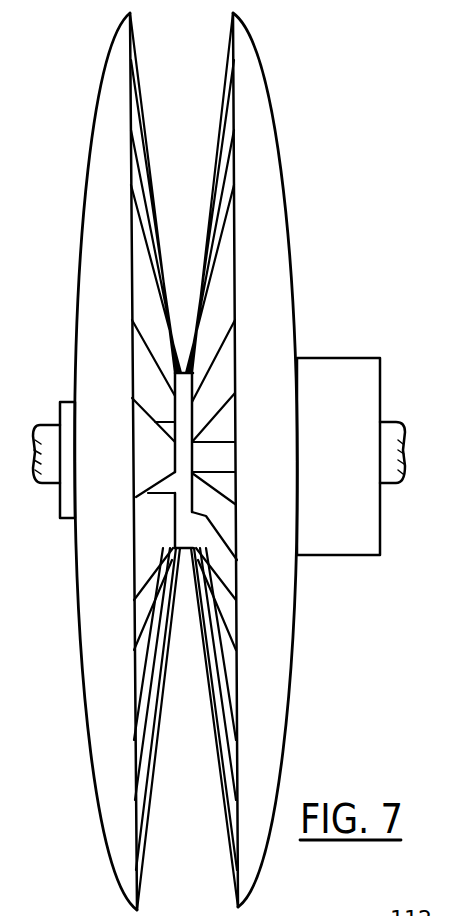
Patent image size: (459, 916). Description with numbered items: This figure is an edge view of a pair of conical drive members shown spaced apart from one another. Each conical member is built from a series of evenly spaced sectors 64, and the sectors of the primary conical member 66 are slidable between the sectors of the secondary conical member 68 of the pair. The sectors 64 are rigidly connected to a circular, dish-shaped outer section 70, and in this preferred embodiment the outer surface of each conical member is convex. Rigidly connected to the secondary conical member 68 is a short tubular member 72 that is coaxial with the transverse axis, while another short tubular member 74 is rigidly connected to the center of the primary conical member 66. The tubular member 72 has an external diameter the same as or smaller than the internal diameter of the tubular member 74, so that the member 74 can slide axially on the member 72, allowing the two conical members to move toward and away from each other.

The sectors 64 is at (134, 437).
The primary conical member 66 is at (285, 622).
The secondary conical member 68 is at (98, 768).
The dish-shaped outer section 70 is at (117, 577).
The short tubular member 72 is at (178, 368).
The short tubular member 74 is at (335, 358).